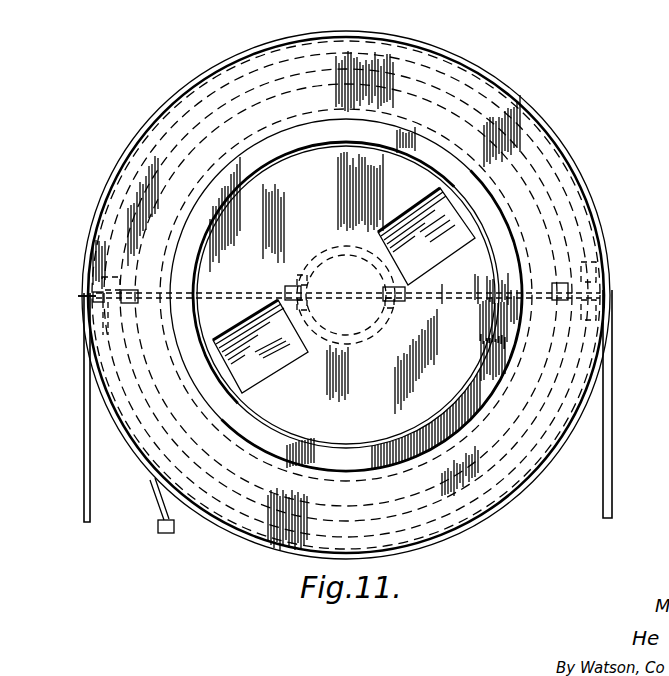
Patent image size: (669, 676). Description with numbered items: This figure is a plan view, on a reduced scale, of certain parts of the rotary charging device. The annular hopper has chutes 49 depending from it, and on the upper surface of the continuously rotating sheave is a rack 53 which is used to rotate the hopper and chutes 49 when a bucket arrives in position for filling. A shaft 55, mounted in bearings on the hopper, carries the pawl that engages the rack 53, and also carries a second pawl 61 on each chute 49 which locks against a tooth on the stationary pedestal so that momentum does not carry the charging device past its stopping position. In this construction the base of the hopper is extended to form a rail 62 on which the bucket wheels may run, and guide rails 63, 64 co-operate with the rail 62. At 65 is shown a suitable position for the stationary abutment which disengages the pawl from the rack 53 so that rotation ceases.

The chutes 49 is at (452, 236).
The rack 53 is at (470, 112).
The shaft 55 is at (222, 297).
The second pawl 61 is at (310, 285).
The rail 62 is at (523, 465).
The guide rail 63 is at (89, 479).
The guide rail 64 is at (603, 508).
The position for the stationary abutment 65 is at (171, 533).